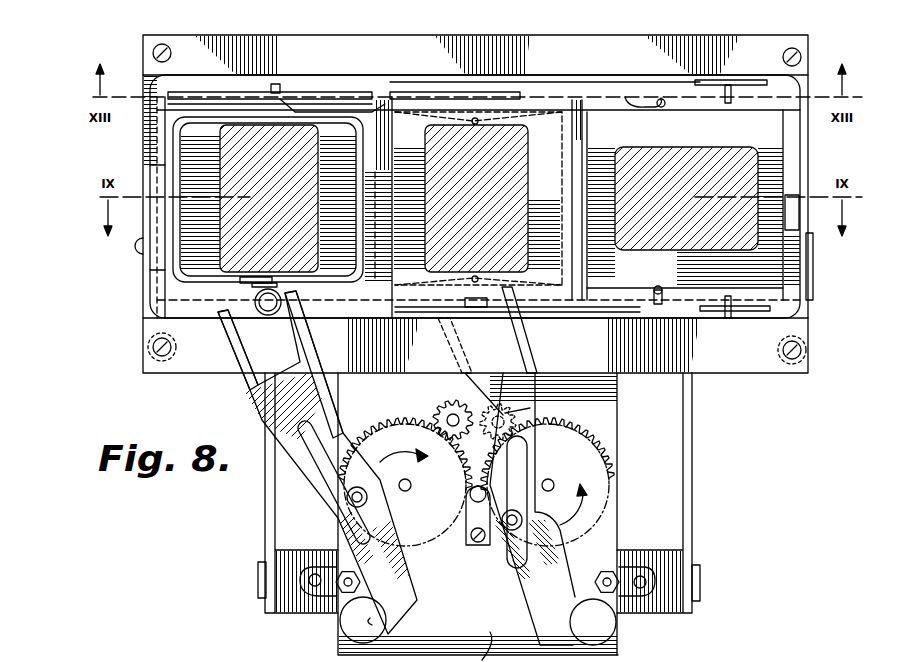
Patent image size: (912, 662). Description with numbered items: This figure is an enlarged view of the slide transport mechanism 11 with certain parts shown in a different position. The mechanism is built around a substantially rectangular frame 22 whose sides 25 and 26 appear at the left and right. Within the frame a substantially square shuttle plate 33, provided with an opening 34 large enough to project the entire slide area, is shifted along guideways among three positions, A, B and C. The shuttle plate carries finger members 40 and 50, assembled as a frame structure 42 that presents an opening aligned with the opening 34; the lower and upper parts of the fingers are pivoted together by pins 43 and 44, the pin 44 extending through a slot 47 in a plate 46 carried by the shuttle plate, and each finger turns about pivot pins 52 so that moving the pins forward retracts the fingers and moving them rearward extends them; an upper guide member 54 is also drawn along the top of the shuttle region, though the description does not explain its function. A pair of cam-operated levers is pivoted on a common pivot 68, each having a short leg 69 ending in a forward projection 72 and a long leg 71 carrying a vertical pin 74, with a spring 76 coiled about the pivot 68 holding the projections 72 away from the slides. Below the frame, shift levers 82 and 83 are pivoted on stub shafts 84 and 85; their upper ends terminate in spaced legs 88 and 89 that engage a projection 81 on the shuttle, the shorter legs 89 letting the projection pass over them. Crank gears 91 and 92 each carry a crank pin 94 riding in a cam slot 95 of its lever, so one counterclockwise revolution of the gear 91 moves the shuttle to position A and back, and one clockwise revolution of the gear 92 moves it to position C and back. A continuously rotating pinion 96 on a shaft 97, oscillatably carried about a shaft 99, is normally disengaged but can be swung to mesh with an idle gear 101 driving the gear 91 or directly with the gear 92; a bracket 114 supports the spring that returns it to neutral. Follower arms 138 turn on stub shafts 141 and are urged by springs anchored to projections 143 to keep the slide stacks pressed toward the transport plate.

The transport mechanism 11 is at (142, 63).
The frame 22 is at (810, 73).
The side 25 is at (803, 152).
The side 26 is at (152, 222).
The shuttle plate 33 is at (158, 268).
The opening 34 is at (178, 240).
The finger member 40 is at (165, 130).
The frame structure 42 is at (166, 150).
The pin 43 is at (266, 277).
The pin 44 is at (276, 84).
The plate 46 is at (232, 92).
The slot 47 is at (305, 96).
The finger member 50 is at (356, 140).
The pivot pins 52 is at (345, 92).
The guide rail 54 is at (440, 78).
The common pivot 68 is at (475, 298).
The short leg 69 is at (640, 107).
The long leg 71 is at (712, 80).
The projection 72 is at (662, 110).
The vertical pin 74 is at (725, 98).
The spring 76 is at (550, 312).
The projection 81 is at (268, 313).
The shift lever 82 is at (533, 395).
The shift lever 83 is at (262, 420).
The stub shaft 84 is at (600, 622).
The stub shaft 85 is at (372, 619).
The leg 88 is at (223, 333).
The leg 89 is at (303, 333).
The crank gear 91 is at (600, 440).
The crank gear 92 is at (372, 432).
The crank pin 94 is at (352, 500).
The cam slot 95 is at (330, 462).
The pinion 96 is at (445, 400).
The shaft 97 is at (447, 420).
The shaft 99 is at (470, 494).
The idle gear 101 is at (518, 414).
The bracket 114 is at (470, 540).
The follower arm 138 is at (265, 500).
The stub shaft 141 is at (258, 575).
The projection 143 is at (315, 587).